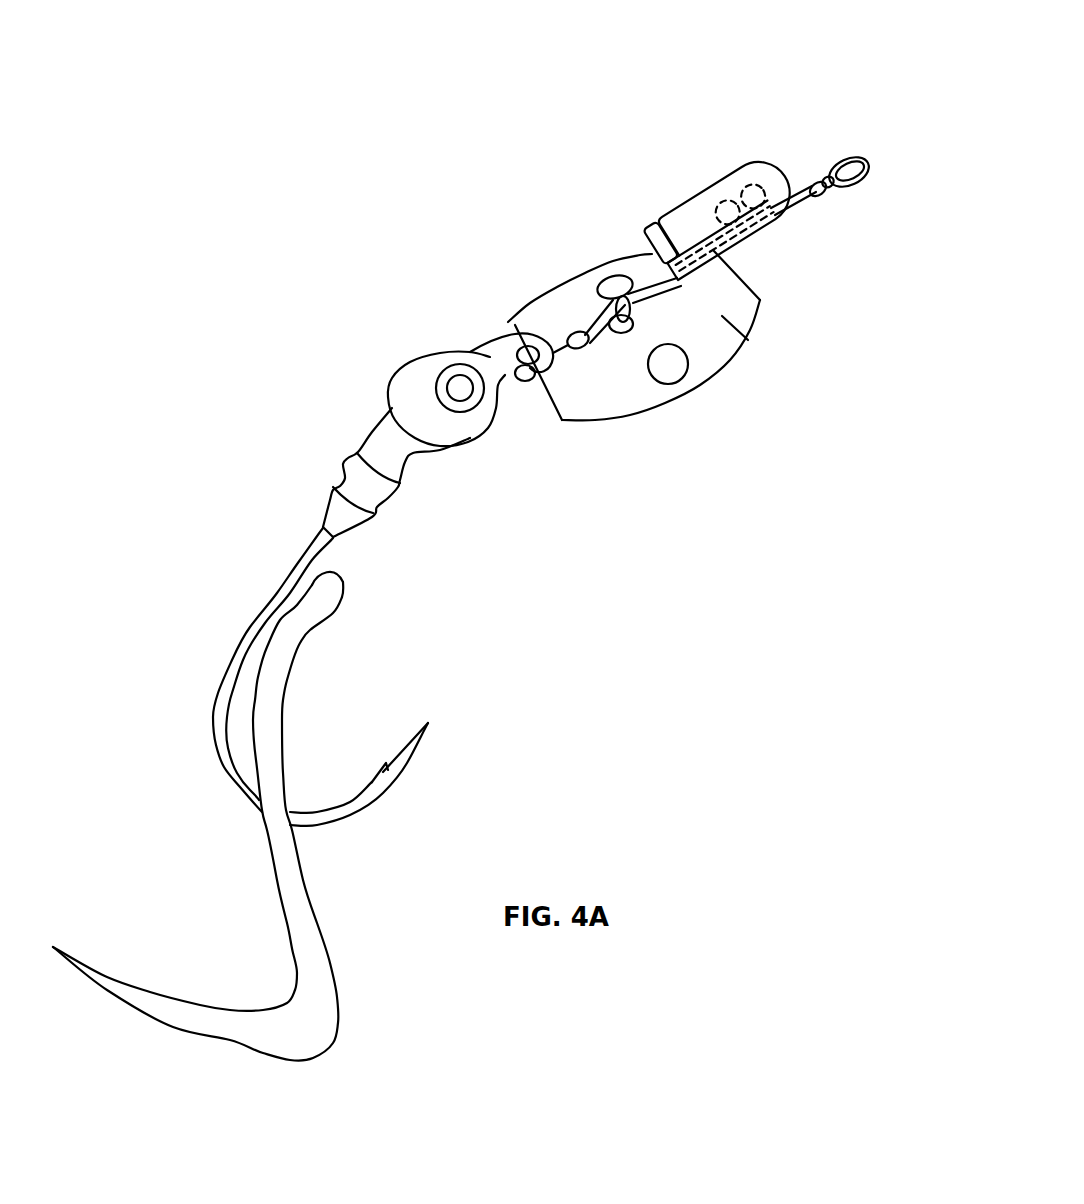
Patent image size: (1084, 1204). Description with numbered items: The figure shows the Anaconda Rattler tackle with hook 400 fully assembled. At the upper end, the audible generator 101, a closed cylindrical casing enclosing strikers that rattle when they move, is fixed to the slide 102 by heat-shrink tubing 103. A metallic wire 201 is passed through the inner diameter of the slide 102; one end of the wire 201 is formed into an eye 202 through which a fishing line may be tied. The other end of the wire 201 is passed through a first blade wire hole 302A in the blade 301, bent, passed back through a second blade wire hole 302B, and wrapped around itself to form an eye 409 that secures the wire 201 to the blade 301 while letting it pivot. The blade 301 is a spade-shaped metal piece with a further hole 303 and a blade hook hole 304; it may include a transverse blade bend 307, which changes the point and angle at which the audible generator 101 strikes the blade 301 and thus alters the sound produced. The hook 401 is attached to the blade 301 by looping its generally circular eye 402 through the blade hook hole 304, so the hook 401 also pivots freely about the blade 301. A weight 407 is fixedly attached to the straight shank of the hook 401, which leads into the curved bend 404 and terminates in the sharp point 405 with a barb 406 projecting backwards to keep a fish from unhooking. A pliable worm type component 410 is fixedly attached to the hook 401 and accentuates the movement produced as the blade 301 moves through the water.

The Anaconda Rattler tackle with hook 400 is at (606, 62).
The audible generator 101 is at (660, 243).
The slide 102 is at (750, 247).
The heat-shrink tubing 103 is at (707, 186).
The wire 201 is at (820, 222).
The eye 202 is at (873, 157).
The blade 301 is at (737, 360).
The first blade wire hole 302A is at (580, 348).
The second blade wire hole 302B is at (622, 333).
The hole 303 is at (603, 277).
The blade hook hole 304 is at (482, 314).
The transverse blade bend 307 is at (727, 317).
The hook 401 is at (303, 517).
The eye 402 is at (525, 382).
The bend 404 is at (250, 621).
The point 405 is at (433, 730).
The barb 406 is at (378, 766).
The weight 407 is at (467, 437).
The eye 409 is at (485, 231).
The pliable worm type component 410 is at (310, 968).